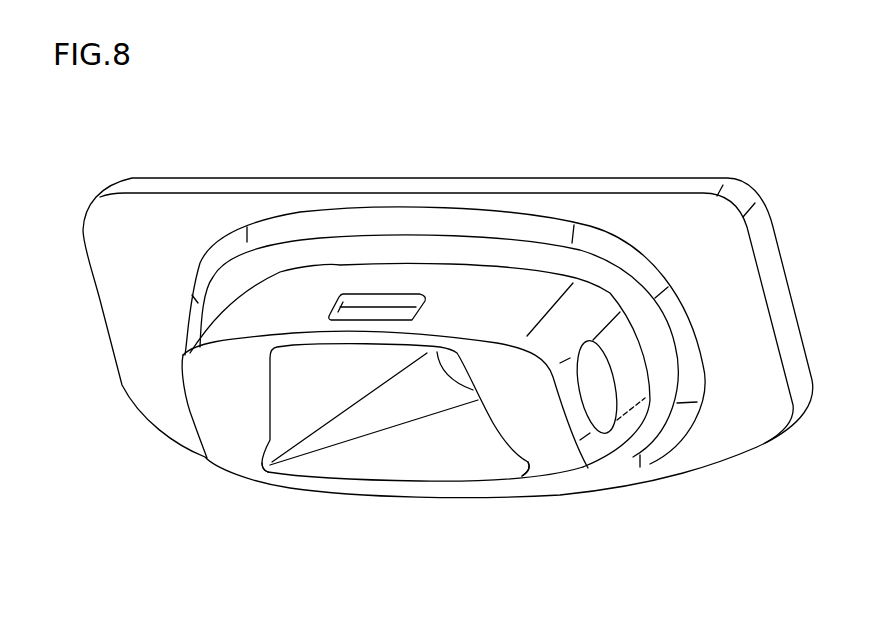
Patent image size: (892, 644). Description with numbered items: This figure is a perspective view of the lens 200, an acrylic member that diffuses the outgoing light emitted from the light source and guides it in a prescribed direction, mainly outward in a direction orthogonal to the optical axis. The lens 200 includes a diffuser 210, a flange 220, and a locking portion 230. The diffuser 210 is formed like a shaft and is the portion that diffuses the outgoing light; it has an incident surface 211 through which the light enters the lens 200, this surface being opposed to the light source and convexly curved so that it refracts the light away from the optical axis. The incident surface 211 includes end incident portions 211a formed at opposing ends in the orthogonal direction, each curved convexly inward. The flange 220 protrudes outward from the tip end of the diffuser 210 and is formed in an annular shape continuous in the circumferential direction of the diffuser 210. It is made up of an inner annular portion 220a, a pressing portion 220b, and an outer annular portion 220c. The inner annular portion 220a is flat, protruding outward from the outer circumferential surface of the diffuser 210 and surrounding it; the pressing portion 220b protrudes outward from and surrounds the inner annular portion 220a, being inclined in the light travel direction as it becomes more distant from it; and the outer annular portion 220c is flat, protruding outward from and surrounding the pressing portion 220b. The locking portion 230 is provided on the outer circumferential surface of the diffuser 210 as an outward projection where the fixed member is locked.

The lens 200 is at (677, 93).
The diffuser 210 is at (487, 288).
The incident surface 211 is at (390, 407).
The end incident portion 211a is at (283, 453).
The flange 220 is at (464, 283).
The inner annular portion 220a is at (420, 301).
The pressing portion 220b is at (637, 267).
The outer annular portion 220c is at (683, 268).
The locking portion 230 is at (380, 306).